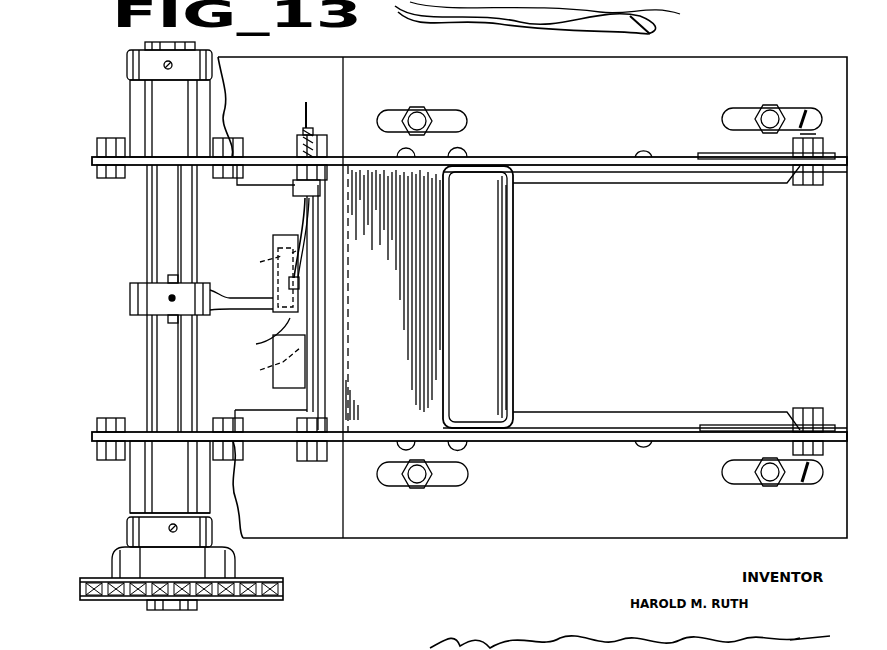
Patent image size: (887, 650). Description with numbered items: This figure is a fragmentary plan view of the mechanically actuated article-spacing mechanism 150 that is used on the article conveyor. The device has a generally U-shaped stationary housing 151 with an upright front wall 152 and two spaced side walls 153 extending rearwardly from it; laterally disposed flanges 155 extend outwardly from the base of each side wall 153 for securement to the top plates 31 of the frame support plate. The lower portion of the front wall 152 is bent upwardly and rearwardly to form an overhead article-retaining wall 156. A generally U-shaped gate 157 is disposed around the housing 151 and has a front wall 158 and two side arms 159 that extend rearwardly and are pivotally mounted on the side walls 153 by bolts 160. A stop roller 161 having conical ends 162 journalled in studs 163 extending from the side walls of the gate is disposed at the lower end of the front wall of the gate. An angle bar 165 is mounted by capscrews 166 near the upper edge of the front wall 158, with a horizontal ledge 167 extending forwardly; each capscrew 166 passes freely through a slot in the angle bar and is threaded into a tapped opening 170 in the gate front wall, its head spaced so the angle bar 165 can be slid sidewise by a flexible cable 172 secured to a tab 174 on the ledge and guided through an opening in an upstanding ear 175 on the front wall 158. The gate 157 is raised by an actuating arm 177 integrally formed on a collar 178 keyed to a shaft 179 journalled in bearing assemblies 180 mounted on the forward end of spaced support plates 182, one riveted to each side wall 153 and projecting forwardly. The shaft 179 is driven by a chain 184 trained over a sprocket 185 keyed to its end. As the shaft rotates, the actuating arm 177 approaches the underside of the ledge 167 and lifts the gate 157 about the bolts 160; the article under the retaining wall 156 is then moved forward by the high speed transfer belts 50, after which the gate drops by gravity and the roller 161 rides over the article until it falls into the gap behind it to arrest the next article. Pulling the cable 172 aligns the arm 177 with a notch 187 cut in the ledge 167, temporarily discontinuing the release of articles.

The top plates 31 is at (298, 101).
The high speed transfer belts 50 is at (652, 18).
The article-spacing mechanism 150 is at (452, 540).
The stationary housing 151 is at (776, 394).
The front wall 152 is at (414, 373).
The side walls 153 is at (582, 172).
The flanges 155 is at (708, 84).
The article-retaining wall 156 is at (498, 287).
The gate 157 is at (316, 291).
The front wall 158 is at (308, 322).
The side arms 159 is at (718, 155).
The bolts 160 is at (810, 186).
The stop roller 161 is at (320, 397).
The conical ends 162 is at (320, 188).
The studs 163 is at (318, 134).
The angle bar 165 is at (276, 243).
The capscrews 166 is at (260, 315).
The ledge 167 is at (286, 386).
The tapped opening 170 is at (310, 258).
The flexible cable 172 is at (304, 118).
The tab 174 is at (289, 283).
The ear 175 is at (294, 190).
The actuating arm 177 is at (252, 298).
The collar 178 is at (131, 300).
The shaft 179 is at (162, 357).
The bearing assemblies 180 is at (184, 129).
The support plates 182 is at (268, 140).
The chain 184 is at (129, 602).
The sprocket 185 is at (224, 560).
The notch 187 is at (256, 338).